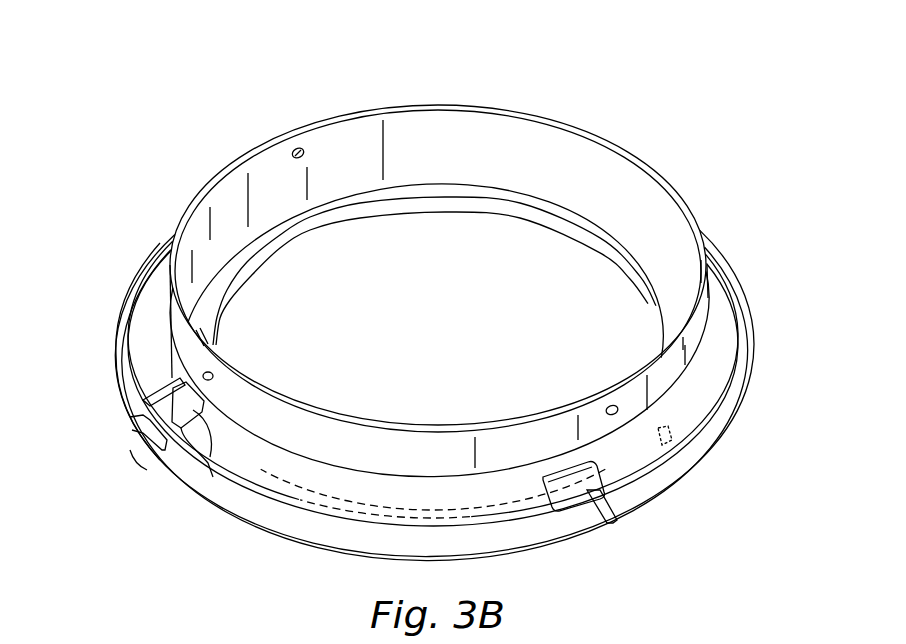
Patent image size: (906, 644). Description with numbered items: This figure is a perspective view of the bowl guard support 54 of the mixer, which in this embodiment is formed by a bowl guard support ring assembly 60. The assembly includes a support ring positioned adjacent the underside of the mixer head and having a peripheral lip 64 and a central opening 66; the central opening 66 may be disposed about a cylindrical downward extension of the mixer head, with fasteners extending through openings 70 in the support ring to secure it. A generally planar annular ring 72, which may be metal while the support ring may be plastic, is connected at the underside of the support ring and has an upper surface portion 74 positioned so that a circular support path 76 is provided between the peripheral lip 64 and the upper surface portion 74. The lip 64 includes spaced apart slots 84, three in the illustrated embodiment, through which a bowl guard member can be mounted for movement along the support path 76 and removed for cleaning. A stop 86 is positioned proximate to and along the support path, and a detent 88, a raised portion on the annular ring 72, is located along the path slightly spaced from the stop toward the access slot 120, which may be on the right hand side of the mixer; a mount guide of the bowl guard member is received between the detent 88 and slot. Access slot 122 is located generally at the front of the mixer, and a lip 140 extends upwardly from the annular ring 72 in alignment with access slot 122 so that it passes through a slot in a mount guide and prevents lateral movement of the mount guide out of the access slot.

The bowl guard support 54 is at (204, 147).
The central opening 66 is at (478, 249).
The peripheral lip 64 is at (148, 346).
The bowl guard support ring assembly 60 is at (103, 382).
The annular ring 72 is at (257, 541).
The upper surface portion 74 is at (348, 542).
The circular support path 76 is at (748, 421).
The stop 86 is at (667, 445).
The openings 70 is at (232, 382).
The access slot 120 is at (558, 485).
The detent 88 is at (614, 508).
The slots 84 is at (203, 465).
The lip 140 is at (152, 432).
The access slot 122 is at (207, 338).